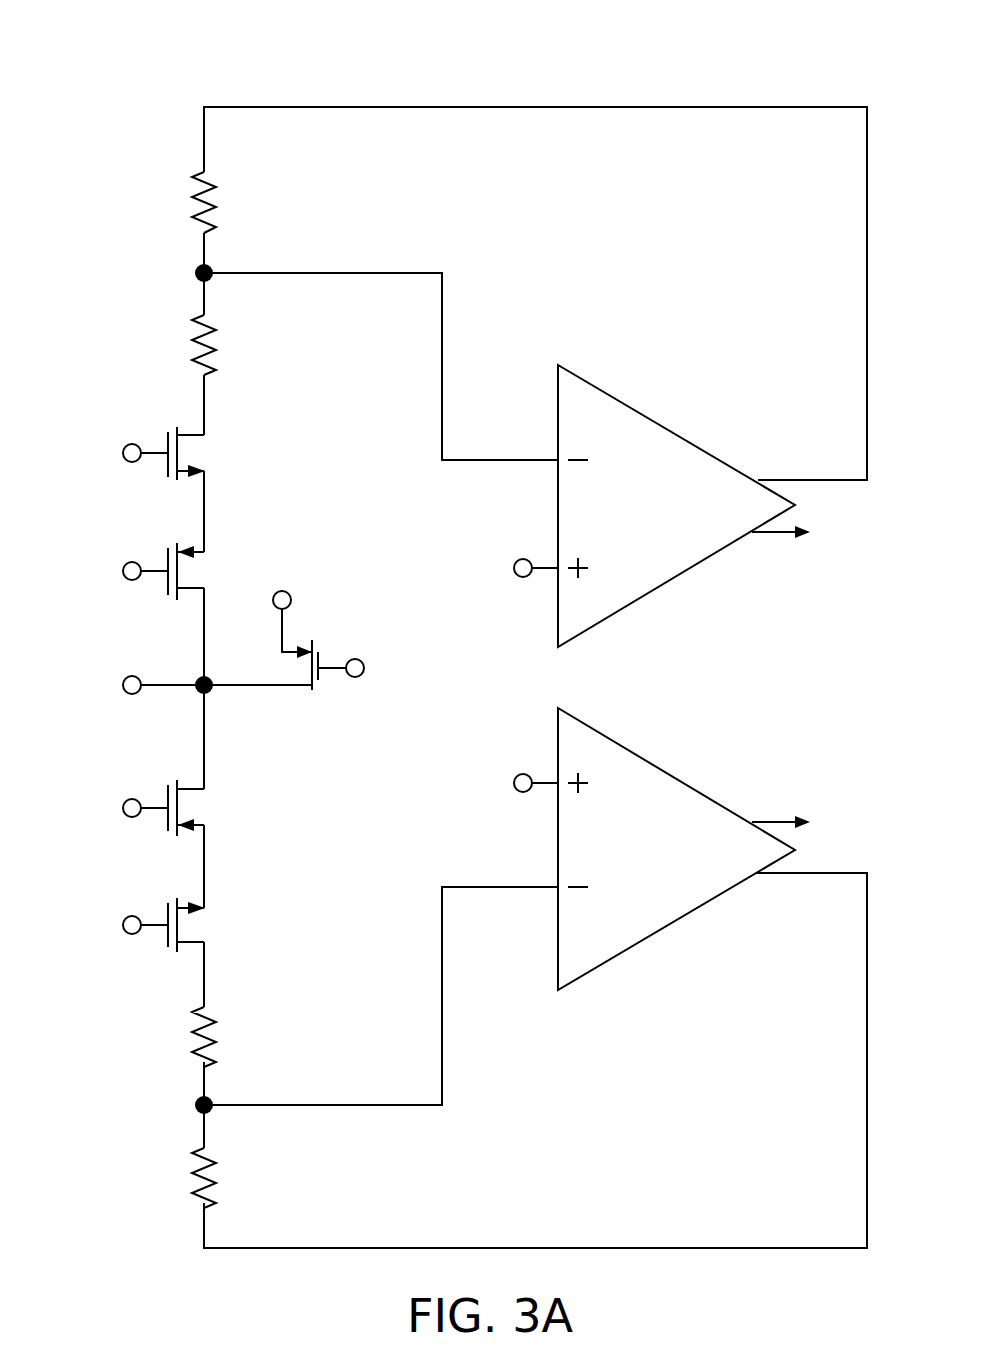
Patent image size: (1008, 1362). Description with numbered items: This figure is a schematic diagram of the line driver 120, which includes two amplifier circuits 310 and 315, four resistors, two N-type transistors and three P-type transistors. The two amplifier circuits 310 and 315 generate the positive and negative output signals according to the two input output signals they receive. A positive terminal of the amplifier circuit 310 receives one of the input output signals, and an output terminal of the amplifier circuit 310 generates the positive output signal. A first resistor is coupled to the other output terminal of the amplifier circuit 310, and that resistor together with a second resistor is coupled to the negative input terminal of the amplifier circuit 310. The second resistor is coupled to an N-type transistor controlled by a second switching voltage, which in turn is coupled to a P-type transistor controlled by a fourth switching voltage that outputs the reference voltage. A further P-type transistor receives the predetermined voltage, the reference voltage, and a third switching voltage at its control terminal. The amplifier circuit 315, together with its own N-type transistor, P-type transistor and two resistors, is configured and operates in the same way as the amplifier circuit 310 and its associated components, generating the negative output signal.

The line driver 120 is at (517, 42).
The amplifier circuit 310 is at (660, 523).
The amplifier circuit 315 is at (660, 853).